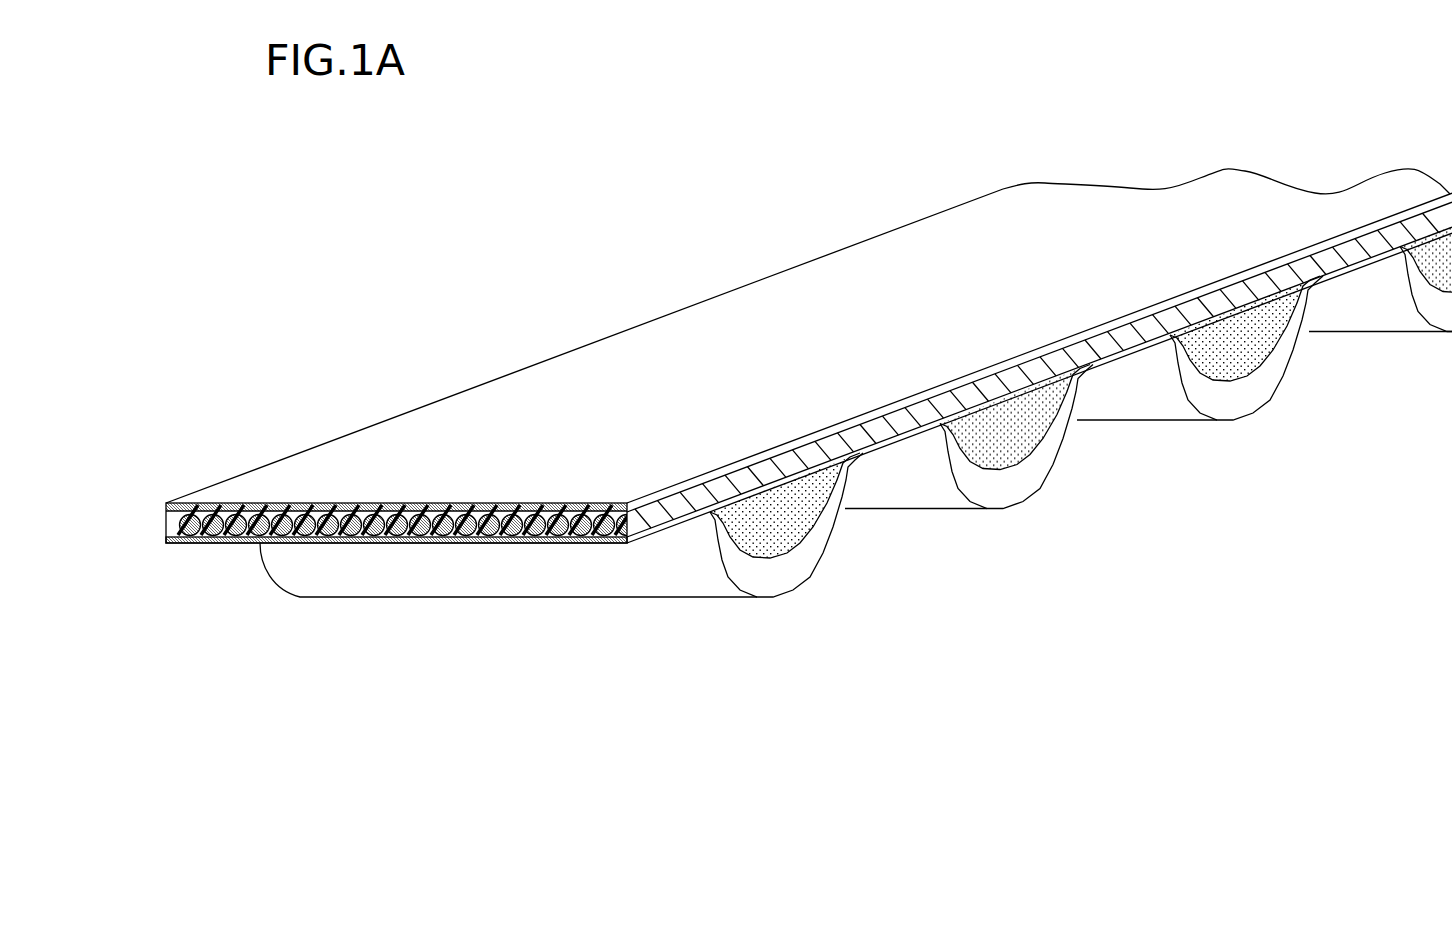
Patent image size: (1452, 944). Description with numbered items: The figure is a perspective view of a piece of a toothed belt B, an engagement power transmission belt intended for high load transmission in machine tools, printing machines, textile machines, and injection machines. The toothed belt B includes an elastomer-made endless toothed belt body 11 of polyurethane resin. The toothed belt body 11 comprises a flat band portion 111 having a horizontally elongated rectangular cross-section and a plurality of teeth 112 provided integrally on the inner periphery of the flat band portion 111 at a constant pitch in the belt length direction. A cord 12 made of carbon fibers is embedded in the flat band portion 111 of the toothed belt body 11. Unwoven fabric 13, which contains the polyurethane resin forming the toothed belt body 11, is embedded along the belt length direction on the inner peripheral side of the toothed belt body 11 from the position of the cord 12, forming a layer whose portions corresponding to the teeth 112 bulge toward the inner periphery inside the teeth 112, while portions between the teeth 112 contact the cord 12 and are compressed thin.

The toothed belt B is at (724, 178).
The toothed belt body 11 is at (167, 520).
The flat band portion 111 is at (408, 512).
The teeth 112 is at (790, 573).
The cord 12 is at (348, 514).
The unwoven fabric 13 is at (403, 543).